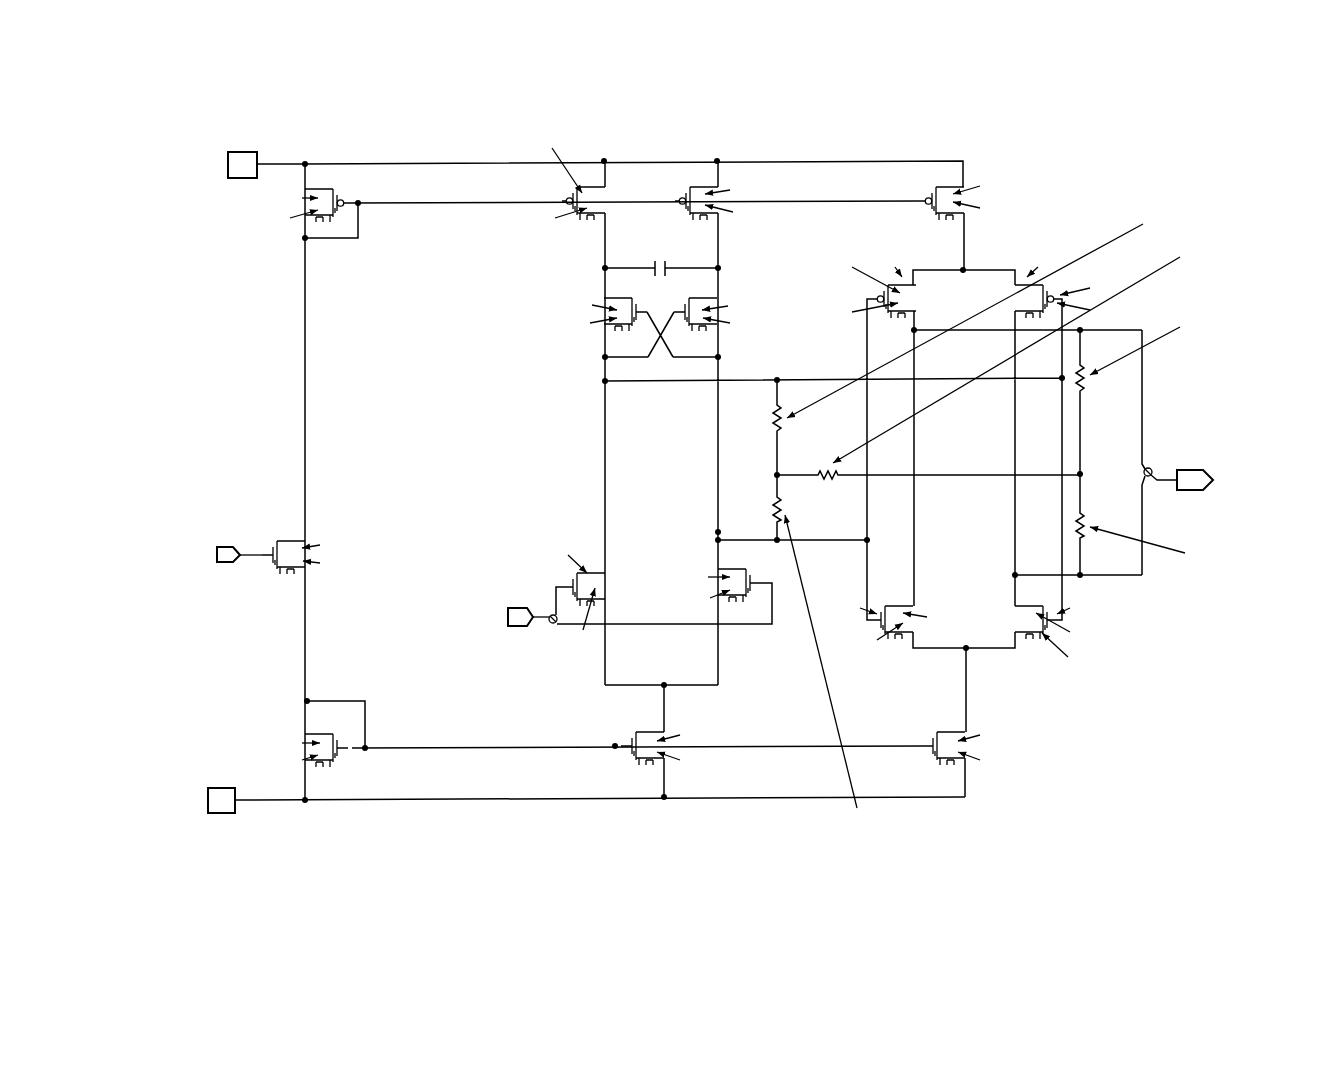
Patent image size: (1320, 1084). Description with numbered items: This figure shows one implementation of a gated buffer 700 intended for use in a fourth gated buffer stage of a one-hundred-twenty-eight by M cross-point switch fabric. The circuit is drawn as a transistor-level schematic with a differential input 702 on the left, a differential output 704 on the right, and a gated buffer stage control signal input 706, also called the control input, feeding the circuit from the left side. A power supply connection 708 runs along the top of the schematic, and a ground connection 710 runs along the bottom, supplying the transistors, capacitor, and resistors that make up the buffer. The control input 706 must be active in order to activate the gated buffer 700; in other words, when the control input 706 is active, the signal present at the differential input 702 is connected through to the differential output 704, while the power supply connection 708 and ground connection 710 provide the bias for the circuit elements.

The gated buffer 700 is at (1160, 113).
The differential input 702 is at (537, 612).
The differential output 704 is at (1163, 468).
The gated buffer stage control signal input 706 is at (250, 552).
The power supply connection 708 is at (345, 163).
The ground connection 710 is at (247, 798).